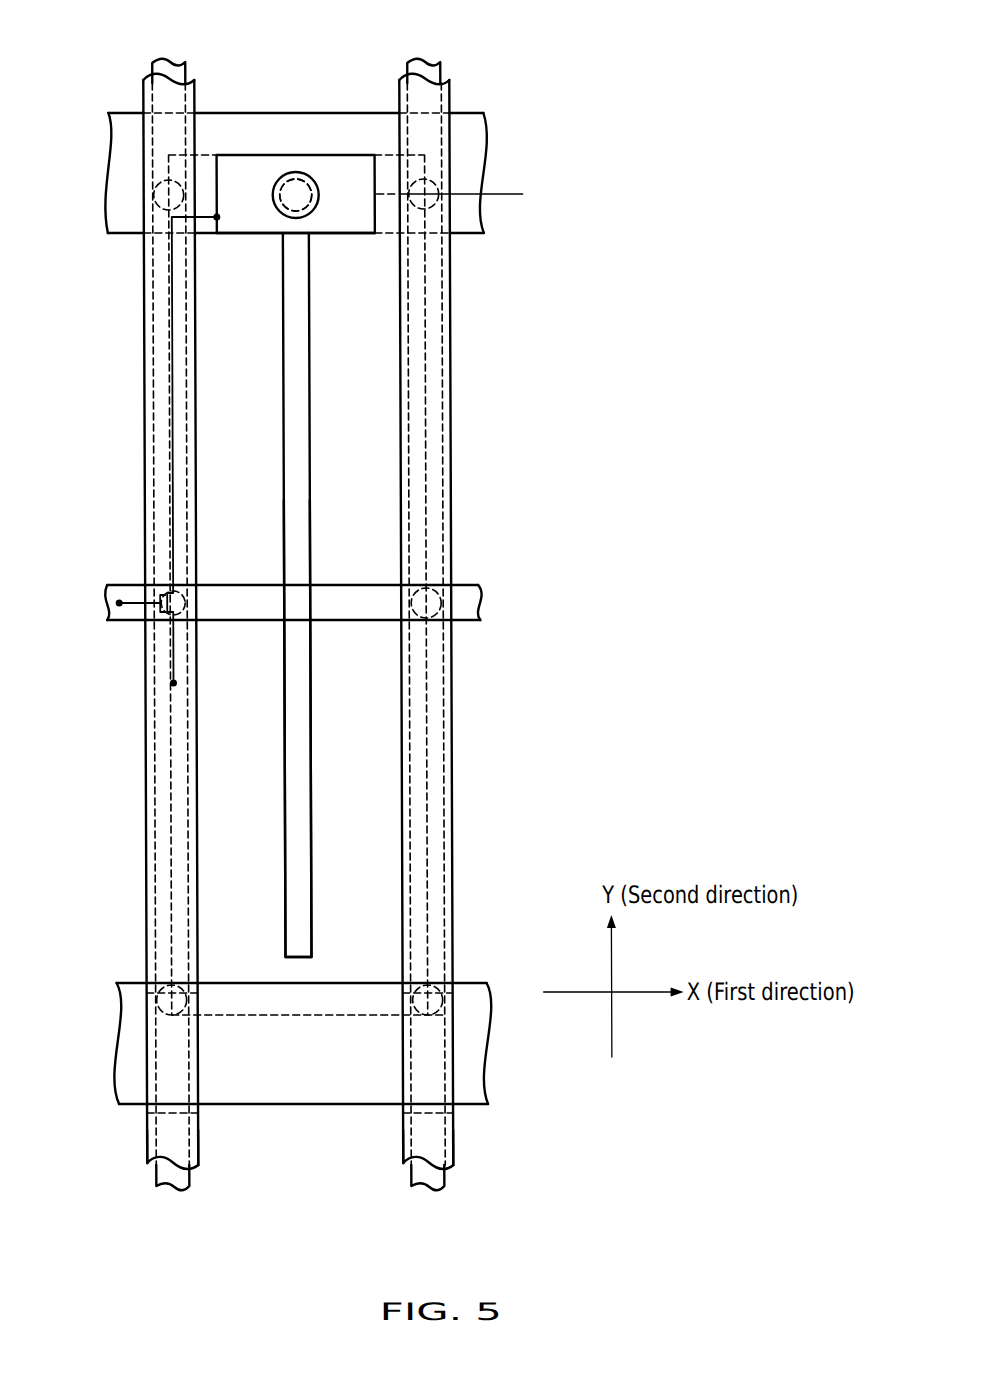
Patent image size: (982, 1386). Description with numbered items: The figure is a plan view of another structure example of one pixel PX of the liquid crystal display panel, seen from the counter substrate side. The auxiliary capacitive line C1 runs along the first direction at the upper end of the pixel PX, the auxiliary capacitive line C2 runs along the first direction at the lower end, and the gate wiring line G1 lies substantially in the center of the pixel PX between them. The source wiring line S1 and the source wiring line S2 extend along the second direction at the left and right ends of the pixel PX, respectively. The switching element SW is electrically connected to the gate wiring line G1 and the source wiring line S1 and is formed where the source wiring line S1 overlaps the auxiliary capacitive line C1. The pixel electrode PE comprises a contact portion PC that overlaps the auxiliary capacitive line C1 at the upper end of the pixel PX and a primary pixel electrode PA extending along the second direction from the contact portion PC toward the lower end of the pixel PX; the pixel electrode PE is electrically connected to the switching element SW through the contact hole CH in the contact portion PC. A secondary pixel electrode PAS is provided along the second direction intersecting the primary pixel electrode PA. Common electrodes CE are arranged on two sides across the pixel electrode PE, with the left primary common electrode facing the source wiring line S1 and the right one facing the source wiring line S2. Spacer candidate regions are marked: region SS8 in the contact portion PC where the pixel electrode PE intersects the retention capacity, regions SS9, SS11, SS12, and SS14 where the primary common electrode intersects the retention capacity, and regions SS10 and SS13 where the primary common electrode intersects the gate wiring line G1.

The source wiring line S1 is at (166, 60).
The source wiring line S2 is at (421, 60).
The secondary pixel electrode PAS is at (233, 177).
The region SS8 is at (291, 170).
The contact hole CH is at (310, 176).
The pixel PX is at (429, 150).
The region SS12 is at (440, 178).
The region SS9 is at (160, 182).
The auxiliary capacitive line C1 is at (108, 170).
The contact portion PC is at (322, 222).
The pixel electrode PE is at (312, 385).
The primary pixel electrode PA is at (300, 525).
The region SS10 is at (162, 590).
The region SS13 is at (437, 588).
The gate wiring line G1 is at (105, 603).
The switching element SW is at (160, 625).
The region SS11 is at (163, 988).
The region SS14 is at (436, 988).
The auxiliary capacitive line C2 is at (108, 1045).
The common electrode CE is at (390, 1143).